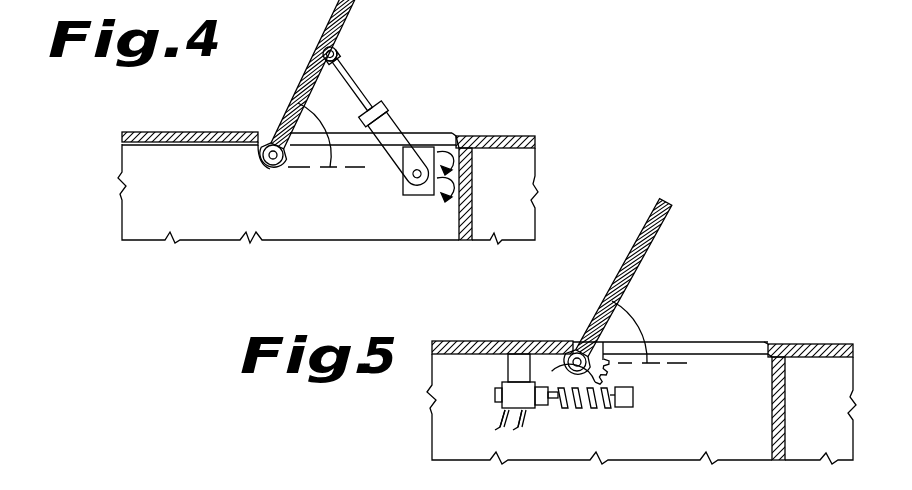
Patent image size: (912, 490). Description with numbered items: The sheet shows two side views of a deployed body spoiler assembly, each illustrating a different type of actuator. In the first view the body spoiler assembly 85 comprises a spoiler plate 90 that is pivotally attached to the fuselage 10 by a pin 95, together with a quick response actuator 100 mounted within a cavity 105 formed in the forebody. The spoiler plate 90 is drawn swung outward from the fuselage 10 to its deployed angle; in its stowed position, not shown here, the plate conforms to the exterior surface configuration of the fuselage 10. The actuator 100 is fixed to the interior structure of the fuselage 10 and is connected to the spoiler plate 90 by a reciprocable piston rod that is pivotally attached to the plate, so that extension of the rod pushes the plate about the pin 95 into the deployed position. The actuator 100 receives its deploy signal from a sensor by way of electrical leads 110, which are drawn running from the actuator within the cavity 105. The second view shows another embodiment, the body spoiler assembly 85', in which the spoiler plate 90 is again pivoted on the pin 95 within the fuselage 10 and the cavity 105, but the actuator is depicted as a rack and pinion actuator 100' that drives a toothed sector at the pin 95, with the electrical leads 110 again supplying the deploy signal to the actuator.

In FIG. 4, the fuselage 10 is at (183, 128).
In FIG. 5, the fuselage 10 is at (480, 341).
In FIG. 4, the body spoiler assembly 85 is at (478, 36).
In FIG. 5, the body spoiler assembly 85' is at (755, 285).
In FIG. 4, the spoiler plate 90 is at (345, 18).
In FIG. 5, the spoiler plate 90 is at (667, 226).
In FIG. 4, the pin 95 is at (274, 168).
In FIG. 5, the pin 95 is at (553, 340).
In FIG. 4, the quick response actuator 100 is at (395, 117).
In FIG. 5, the rack and pinion actuator 100' is at (495, 394).
In FIG. 4, the cavity 105 is at (224, 209).
In FIG. 5, the cavity 105 is at (722, 426).
In FIG. 4, the electrical leads 110 is at (437, 203).
In FIG. 5, the electrical leads 110 is at (527, 425).